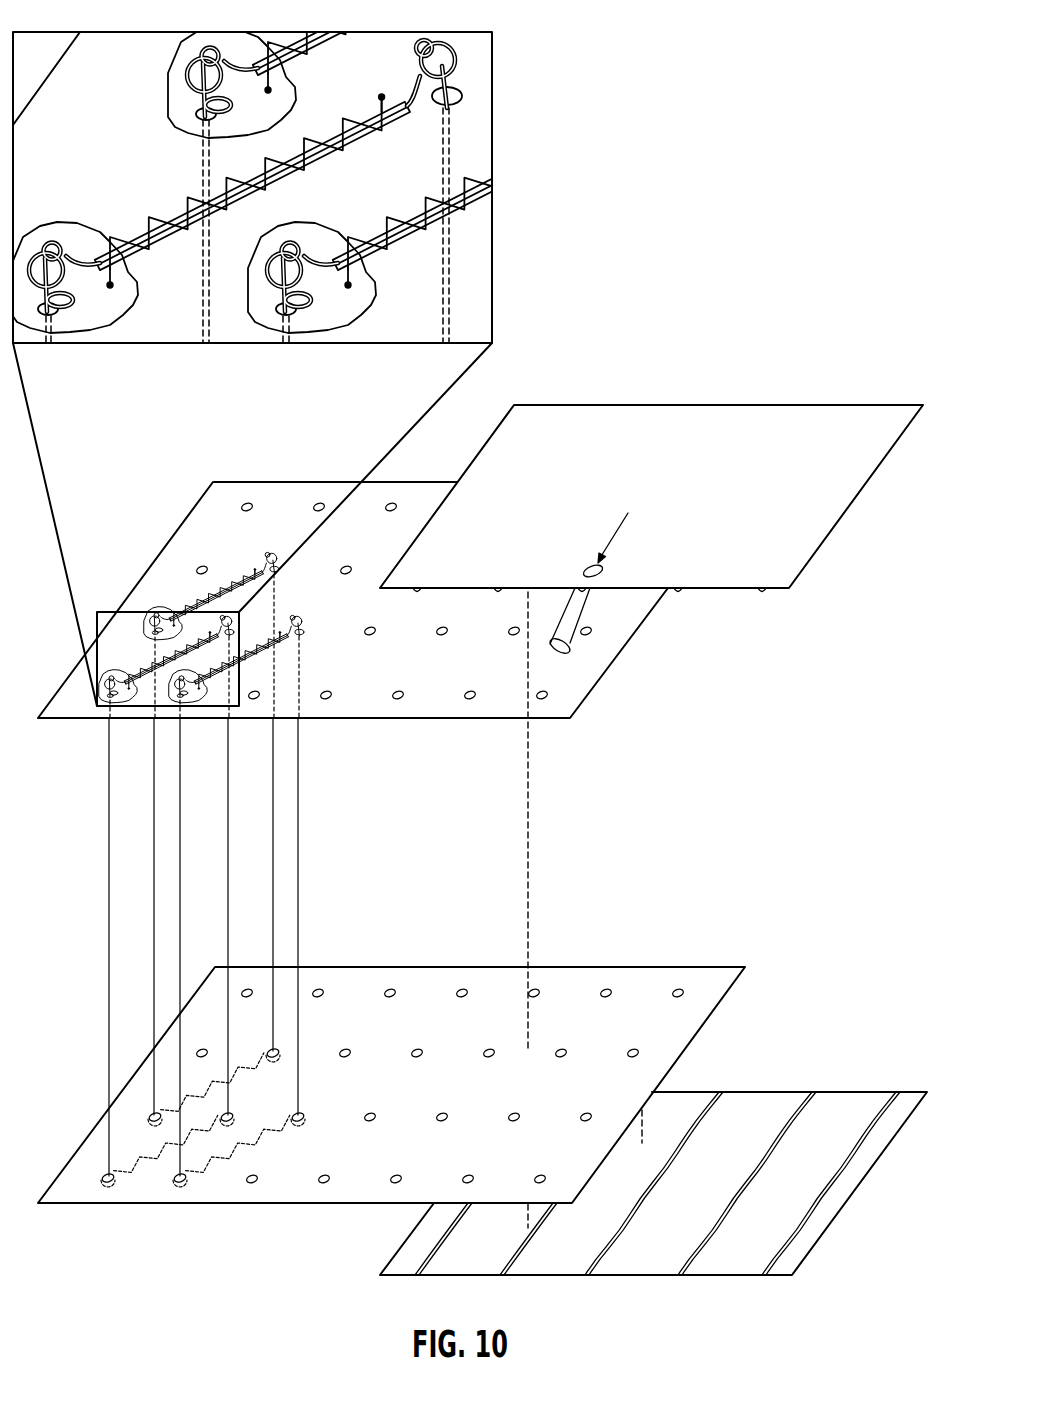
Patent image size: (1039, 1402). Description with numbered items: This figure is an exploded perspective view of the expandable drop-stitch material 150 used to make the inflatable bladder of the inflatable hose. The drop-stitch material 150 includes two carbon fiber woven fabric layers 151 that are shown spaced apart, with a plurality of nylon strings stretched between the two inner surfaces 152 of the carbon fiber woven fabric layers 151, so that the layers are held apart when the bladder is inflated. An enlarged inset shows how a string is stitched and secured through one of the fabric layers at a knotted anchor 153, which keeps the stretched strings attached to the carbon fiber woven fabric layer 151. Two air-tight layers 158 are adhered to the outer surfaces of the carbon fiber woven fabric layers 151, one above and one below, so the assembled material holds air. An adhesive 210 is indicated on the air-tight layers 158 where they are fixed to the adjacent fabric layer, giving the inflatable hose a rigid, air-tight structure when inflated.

The drop-stitch material 150 is at (566, 131).
The carbon fiber woven fabric layer 151 is at (177, 307).
The inner surface 152 is at (643, 975).
The suture knot 153 is at (35, 310).
The air-tight layer 158 is at (818, 408).
The adhesive 210 is at (802, 1107).